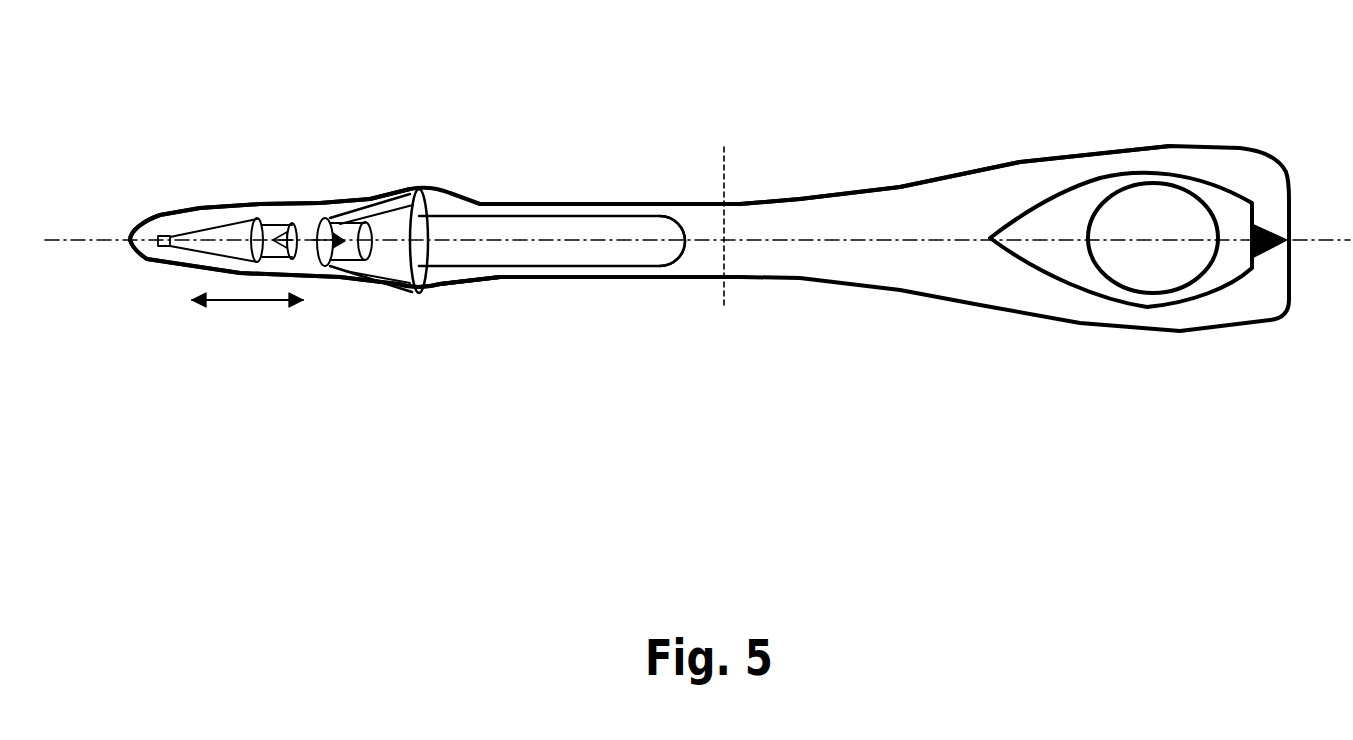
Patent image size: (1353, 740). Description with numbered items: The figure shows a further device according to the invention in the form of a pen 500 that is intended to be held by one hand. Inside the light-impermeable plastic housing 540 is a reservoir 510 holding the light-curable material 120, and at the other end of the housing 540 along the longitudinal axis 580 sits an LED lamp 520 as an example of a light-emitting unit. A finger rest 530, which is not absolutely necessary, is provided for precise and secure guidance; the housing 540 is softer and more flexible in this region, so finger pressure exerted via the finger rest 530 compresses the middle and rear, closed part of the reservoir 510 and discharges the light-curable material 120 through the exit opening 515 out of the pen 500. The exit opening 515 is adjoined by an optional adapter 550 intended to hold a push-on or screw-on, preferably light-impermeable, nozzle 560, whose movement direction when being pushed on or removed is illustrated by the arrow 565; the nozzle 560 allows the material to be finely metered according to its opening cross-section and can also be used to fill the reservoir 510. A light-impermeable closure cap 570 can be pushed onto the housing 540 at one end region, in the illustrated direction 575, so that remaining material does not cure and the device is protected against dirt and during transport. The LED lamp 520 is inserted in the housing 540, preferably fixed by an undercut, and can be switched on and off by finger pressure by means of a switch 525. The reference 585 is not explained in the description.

The pen 500 is at (602, 114).
The light-curable material 120 is at (573, 248).
The reservoir 510 is at (684, 243).
The exit opening 515 is at (395, 288).
The LED lamp 520 is at (1158, 263).
The switch 525 is at (1258, 258).
The finger rest 530 is at (450, 287).
The housing 540 is at (797, 197).
The adapter 550 is at (350, 280).
The nozzle 560 is at (228, 240).
The arrow 565 is at (313, 235).
The closure cap 570 is at (147, 260).
The direction 575 is at (233, 302).
The longitudinal axis 580 is at (83, 242).
The section line 585 is at (727, 150).